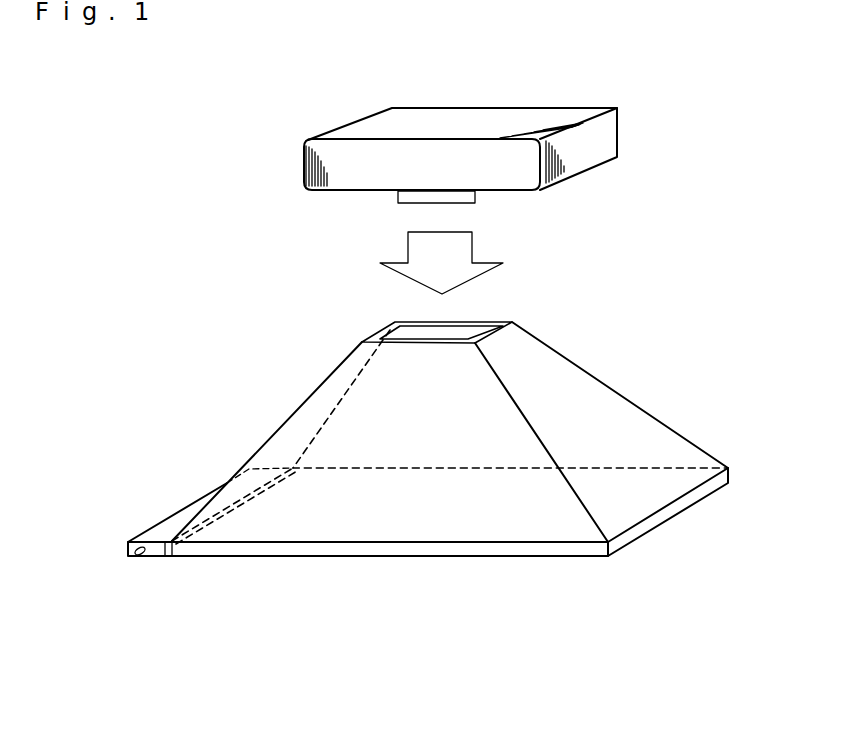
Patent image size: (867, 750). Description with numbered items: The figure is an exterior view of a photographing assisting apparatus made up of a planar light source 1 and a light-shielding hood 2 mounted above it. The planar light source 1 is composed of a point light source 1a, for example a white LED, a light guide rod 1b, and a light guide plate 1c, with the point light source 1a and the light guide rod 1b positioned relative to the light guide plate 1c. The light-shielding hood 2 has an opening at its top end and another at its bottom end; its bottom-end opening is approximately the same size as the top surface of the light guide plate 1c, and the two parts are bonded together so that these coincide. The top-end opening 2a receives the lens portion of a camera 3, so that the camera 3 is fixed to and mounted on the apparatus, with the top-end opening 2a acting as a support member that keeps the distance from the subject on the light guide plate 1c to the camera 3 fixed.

The planar light source 1 is at (416, 561).
The point light source 1a is at (138, 557).
The light guide rod 1b is at (163, 557).
The light guide plate 1c is at (390, 583).
The light-shielding hood 2 is at (450, 402).
The top-end opening 2a is at (460, 335).
The camera 3 is at (335, 130).